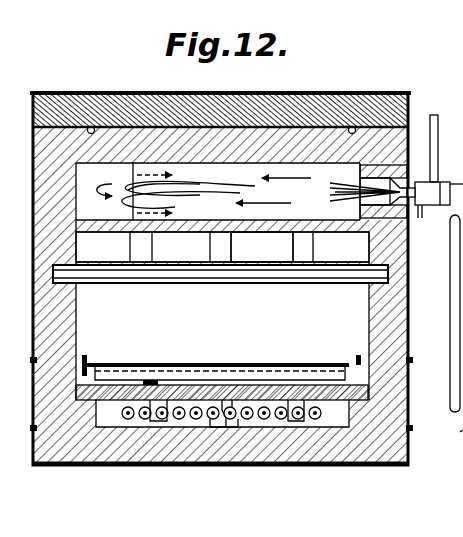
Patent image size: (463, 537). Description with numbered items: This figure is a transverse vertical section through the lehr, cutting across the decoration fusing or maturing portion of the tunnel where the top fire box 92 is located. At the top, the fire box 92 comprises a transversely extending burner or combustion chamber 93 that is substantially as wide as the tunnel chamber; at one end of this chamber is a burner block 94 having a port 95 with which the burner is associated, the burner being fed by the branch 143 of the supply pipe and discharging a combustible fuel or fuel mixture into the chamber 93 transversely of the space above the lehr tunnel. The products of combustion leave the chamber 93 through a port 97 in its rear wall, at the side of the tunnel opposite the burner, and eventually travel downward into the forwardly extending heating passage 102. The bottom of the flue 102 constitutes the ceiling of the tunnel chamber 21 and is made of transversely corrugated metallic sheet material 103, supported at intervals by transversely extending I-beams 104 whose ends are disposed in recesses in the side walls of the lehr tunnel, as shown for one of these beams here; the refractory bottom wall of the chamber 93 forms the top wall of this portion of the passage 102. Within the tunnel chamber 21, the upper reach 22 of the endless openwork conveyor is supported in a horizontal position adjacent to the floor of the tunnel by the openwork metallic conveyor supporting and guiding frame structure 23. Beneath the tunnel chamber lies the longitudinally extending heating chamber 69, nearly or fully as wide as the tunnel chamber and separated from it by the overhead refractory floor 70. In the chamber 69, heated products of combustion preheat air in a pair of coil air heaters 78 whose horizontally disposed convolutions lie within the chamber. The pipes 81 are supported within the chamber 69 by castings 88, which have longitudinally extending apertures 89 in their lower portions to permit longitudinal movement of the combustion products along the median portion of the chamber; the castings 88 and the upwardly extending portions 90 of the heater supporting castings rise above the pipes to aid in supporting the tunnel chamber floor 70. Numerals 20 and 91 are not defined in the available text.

The furnace 20 is at (368, 92).
The top fire box 92 is at (201, 92).
The burner or combustion chamber 93 is at (235, 176).
The port 97 is at (204, 191).
The burner block 94 is at (356, 172).
The port 95 is at (413, 205).
The branch 143 is at (439, 114).
The heating passage 102 is at (328, 236).
The corrugated metallic sheet material 103 is at (280, 246).
The I-beams 104 is at (167, 272).
The longitudinal chamber or passage 21 is at (222, 323).
The upper reach 22 is at (100, 362).
The conveyor supporting and guiding frame structure 23 is at (238, 361).
The floor 70 is at (172, 383).
The refractory slab 91 is at (148, 384).
The castings 88 is at (229, 404).
The upwardly extending portions 90 is at (130, 424).
The pipes 81 is at (208, 421).
The apertures 89 is at (223, 431).
The coil air heaters 78 is at (122, 414).
The heating chamber 69 is at (401, 421).